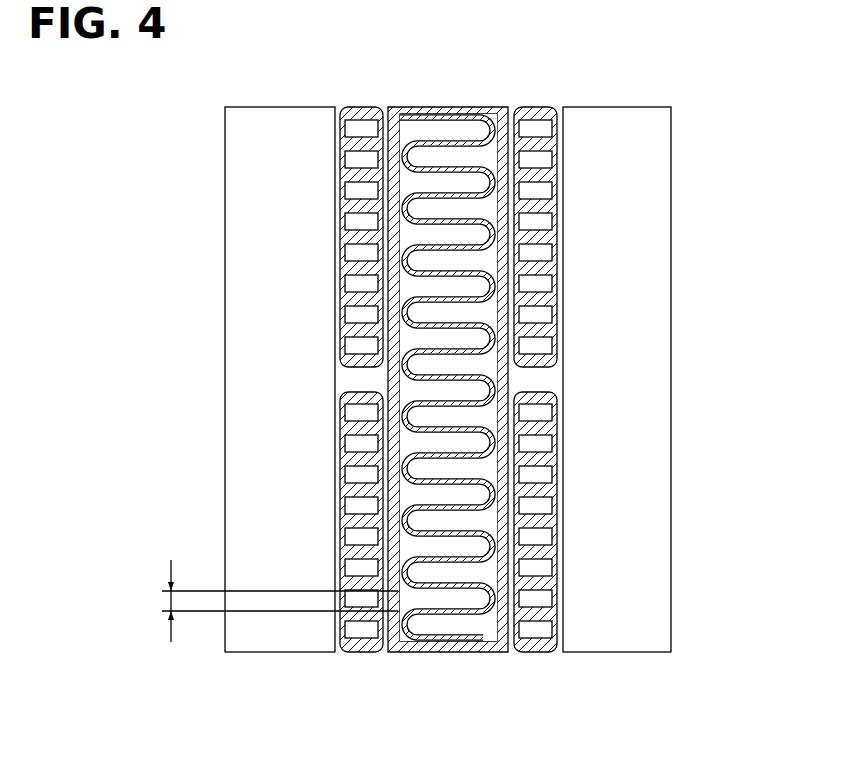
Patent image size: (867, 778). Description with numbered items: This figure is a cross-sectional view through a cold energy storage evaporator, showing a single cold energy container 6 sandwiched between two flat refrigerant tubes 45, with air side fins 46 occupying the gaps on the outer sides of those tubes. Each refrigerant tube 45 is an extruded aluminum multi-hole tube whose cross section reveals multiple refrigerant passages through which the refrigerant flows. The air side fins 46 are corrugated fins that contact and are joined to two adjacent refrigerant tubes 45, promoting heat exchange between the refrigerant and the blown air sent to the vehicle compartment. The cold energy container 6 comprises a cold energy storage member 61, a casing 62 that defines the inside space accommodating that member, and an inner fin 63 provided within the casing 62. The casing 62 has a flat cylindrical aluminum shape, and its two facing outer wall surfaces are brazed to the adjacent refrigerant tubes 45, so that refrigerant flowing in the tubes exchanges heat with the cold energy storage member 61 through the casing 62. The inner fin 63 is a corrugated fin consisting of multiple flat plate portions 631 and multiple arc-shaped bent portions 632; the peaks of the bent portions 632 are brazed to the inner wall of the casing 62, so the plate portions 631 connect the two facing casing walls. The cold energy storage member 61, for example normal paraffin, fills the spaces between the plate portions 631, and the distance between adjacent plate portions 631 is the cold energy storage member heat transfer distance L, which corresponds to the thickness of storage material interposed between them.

The cold energy container 6 is at (601, 343).
The refrigerant tube 45 is at (366, 112).
The air side fin 46 is at (240, 199).
The cold energy storage member 61 is at (463, 208).
The casing 62 is at (507, 302).
The inner fin 63 is at (601, 379).
The plate portion 631 is at (463, 490).
The bent portion 632 is at (403, 521).
The cold energy storage member heat transfer distance L is at (270, 601).